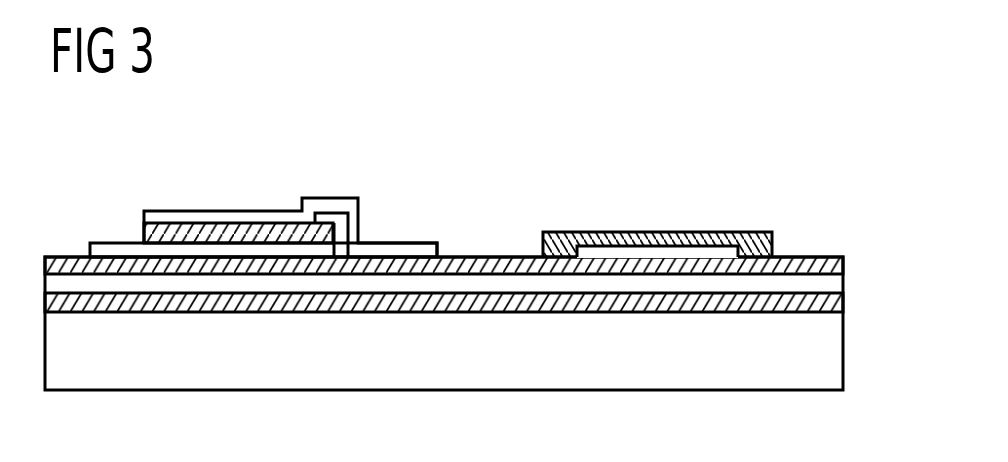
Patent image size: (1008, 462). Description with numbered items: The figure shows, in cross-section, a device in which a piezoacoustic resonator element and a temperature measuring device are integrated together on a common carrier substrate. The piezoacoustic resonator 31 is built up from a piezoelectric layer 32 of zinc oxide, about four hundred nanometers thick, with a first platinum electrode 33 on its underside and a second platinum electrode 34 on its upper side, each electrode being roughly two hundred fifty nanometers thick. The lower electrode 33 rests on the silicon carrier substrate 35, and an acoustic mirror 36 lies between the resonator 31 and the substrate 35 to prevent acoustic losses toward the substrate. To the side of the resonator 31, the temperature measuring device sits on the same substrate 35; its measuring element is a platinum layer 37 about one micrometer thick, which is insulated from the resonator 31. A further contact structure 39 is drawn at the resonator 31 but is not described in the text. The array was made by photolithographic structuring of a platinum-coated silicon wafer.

The piezoacoustic resonator 31 is at (226, 137).
The piezoelectric layer 32 is at (203, 232).
The first platinum electrode 33 is at (123, 250).
The second platinum electrode 34 is at (283, 219).
The carrier substrate 35 is at (835, 352).
The acoustic mirror 36 is at (852, 256).
The platinum layer 37 is at (665, 248).
The contact via 39 is at (343, 221).